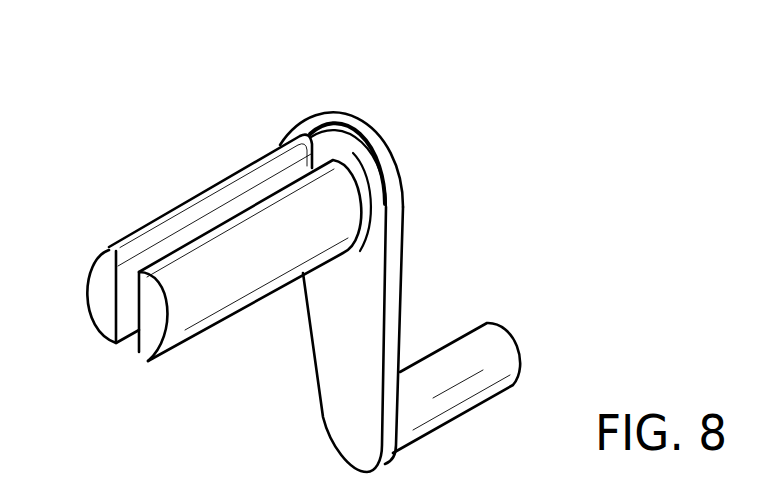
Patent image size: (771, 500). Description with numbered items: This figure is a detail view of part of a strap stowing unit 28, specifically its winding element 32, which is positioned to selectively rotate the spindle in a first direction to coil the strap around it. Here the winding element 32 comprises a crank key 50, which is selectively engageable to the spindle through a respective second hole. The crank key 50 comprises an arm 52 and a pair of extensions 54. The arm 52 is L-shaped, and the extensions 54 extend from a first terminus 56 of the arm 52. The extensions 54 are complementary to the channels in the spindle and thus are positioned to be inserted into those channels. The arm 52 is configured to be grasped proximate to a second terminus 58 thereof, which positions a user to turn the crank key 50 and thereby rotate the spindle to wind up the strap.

The strap stowing unit 28 is at (180, 170).
The winding element 32 is at (372, 126).
The crank key 50 is at (480, 243).
The arm 52 is at (406, 283).
The extensions 54 is at (150, 337).
The first terminus 56 is at (331, 111).
The second terminus 58 is at (527, 341).